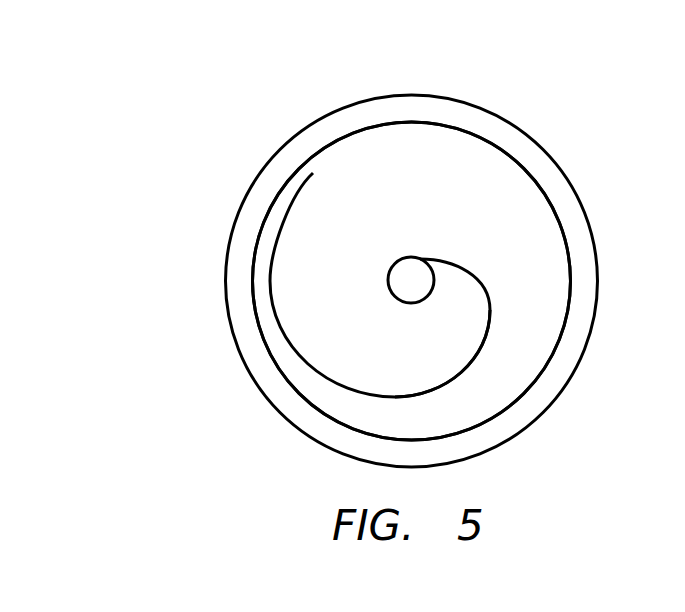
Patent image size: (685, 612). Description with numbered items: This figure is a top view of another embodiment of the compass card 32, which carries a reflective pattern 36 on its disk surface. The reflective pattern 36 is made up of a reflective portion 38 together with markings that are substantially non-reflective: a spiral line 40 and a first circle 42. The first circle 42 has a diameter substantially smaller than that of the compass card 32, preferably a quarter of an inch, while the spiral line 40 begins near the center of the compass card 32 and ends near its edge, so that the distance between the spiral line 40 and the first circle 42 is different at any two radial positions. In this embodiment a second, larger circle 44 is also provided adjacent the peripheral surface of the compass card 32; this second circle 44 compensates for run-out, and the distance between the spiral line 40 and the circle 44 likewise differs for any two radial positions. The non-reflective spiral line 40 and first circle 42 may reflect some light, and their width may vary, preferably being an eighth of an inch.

The compass card 32 is at (266, 146).
The reflective pattern 36 is at (545, 155).
The circle 44 is at (358, 128).
The reflective portion 38 is at (332, 255).
The substantially non-reflective spiral line 40 is at (485, 348).
The first substantially non-reflective circle 42 is at (395, 297).